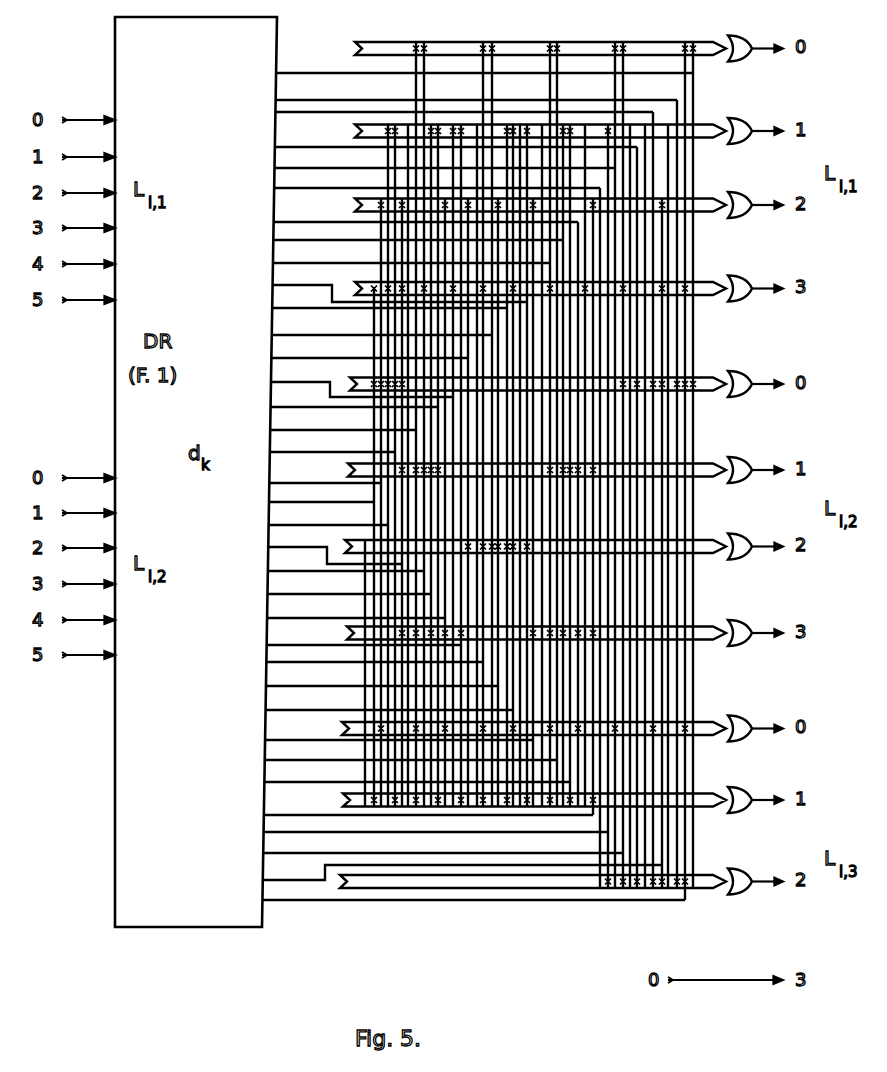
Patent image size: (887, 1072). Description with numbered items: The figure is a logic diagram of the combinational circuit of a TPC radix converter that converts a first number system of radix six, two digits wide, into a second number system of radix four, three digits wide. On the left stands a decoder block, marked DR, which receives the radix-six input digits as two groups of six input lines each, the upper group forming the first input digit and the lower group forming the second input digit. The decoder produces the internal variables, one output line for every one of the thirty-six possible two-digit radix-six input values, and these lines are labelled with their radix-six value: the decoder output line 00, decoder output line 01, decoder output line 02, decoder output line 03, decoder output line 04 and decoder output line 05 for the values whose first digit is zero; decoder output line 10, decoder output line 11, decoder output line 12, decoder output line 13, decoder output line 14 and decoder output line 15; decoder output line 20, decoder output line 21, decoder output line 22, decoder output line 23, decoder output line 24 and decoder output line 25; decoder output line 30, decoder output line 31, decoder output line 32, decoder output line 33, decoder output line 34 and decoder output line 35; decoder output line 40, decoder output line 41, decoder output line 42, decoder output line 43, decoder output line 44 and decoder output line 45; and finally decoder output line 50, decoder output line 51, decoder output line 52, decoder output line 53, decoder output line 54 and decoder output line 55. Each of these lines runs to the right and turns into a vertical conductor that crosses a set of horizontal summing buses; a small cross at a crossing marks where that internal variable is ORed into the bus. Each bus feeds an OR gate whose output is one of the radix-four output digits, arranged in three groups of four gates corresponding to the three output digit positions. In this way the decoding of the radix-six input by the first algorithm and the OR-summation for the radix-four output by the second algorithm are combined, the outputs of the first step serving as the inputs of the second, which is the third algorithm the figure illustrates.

The decoder output line 00 is at (467, 465).
The decoder output line 01 is at (459, 488).
The decoder output line 02 is at (447, 497).
The decoder output line 03 is at (439, 511).
The decoder output line 04 is at (428, 465).
The decoder output line 05 is at (420, 532).
The decoder output line 10 is at (409, 505).
The decoder output line 11 is at (401, 465).
The decoder output line 12 is at (395, 424).
The decoder output line 13 is at (383, 465).
The decoder output line 14 is at (373, 465).
The decoder output line 15 is at (365, 424).
The decoder output line 20 is at (353, 502).
The decoder output line 21 is at (345, 465).
The decoder output line 22 is at (338, 465).
The decoder output line 23 is at (327, 424).
The decoder output line 24 is at (316, 465).
The decoder output line 25 is at (309, 502).
The decoder output line 30 is at (305, 547).
The decoder output line 31 is at (312, 465).
The decoder output line 32 is at (319, 502).
The decoder output line 33 is at (330, 424).
The decoder output line 34 is at (333, 465).
The decoder output line 35 is at (340, 502).
The decoder output line 40 is at (348, 465).
The decoder output line 41 is at (359, 424).
The decoder output line 42 is at (366, 502).
The decoder output line 43 is at (373, 465).
The decoder output line 44 is at (383, 502).
The decoder output line 45 is at (395, 424).
The decoder output line 50 is at (401, 465).
The decoder output line 51 is at (413, 510).
The decoder output line 52 is at (420, 506).
The decoder output line 53 is at (427, 465).
The decoder output line 54 is at (447, 545).
The decoder output line 55 is at (458, 477).